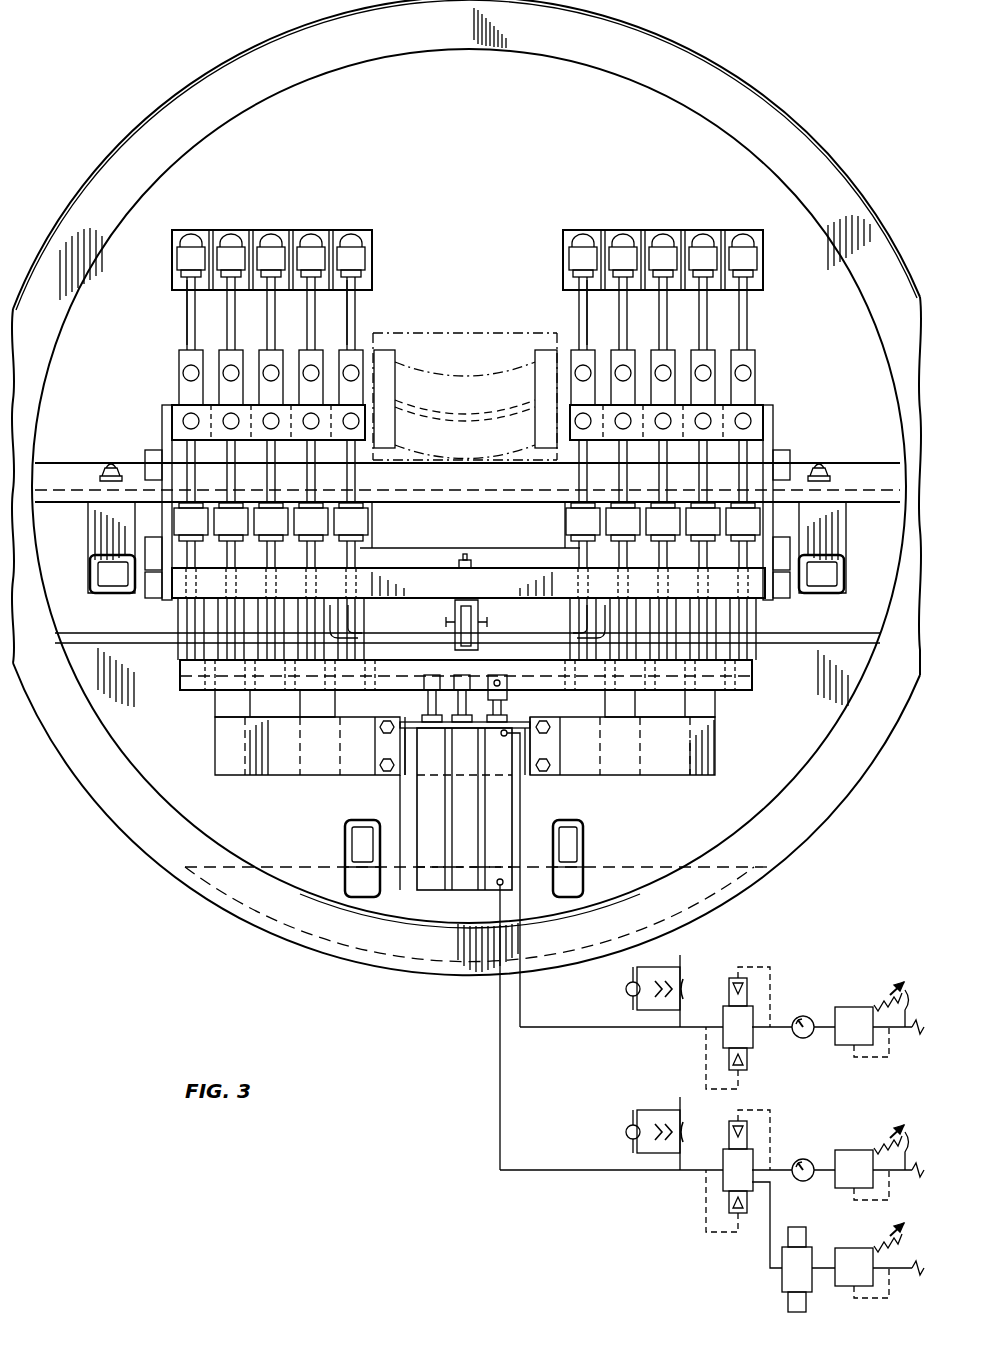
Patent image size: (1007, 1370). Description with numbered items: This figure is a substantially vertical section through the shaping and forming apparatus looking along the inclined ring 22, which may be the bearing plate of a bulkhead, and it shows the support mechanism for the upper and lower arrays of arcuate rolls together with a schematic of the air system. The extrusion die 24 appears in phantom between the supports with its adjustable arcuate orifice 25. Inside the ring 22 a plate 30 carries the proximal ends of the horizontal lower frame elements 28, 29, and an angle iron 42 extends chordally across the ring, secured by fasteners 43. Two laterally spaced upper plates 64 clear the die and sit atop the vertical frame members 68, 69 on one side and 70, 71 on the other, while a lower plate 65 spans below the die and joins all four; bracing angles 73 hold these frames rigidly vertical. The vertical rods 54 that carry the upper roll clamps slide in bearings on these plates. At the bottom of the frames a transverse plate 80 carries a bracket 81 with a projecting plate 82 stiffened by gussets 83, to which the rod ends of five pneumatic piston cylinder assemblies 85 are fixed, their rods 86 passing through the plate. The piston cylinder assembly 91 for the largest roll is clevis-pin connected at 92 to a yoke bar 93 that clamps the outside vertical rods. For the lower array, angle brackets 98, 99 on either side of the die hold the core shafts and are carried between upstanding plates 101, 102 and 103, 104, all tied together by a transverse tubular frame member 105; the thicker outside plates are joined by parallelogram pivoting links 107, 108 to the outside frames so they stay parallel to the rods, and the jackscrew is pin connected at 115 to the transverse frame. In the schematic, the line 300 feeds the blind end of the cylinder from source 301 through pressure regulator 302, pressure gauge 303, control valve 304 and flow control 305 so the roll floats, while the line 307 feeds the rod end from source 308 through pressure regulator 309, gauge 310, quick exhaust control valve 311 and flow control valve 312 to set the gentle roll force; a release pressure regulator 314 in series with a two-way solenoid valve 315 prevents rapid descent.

The ring 22 is at (372, 44).
The extrusion die 24 is at (430, 375).
The arcuate orifice 25 is at (462, 418).
The lower frame element 28 is at (583, 840).
The lower frame element 29 is at (348, 842).
The plate 30 is at (637, 862).
The angle iron 42 is at (72, 495).
The fasteners 43 is at (108, 466).
The vertical rods 54 is at (356, 300).
The upper plates 64 is at (372, 250).
The lower plate 65 is at (470, 562).
The vertical frame member 68 is at (712, 308).
The vertical frame member 69 is at (602, 300).
The vertical frame member 70 is at (328, 318).
The vertical frame member 71 is at (215, 306).
The bracing angles 73 is at (340, 615).
The transverse plate 80 is at (278, 775).
The bracket 81 is at (535, 740).
The plate 82 is at (468, 728).
The gussets 83 is at (400, 742).
The pneumatic piston cylinder assemblies 85 is at (412, 826).
The rods 86 is at (418, 712).
The piston cylinder assembly 91 is at (480, 885).
The clevis-pin connection 92 is at (507, 700).
The yoke bar 93 is at (572, 688).
The angle bracket 98 is at (182, 395).
The angle bracket 99 is at (755, 395).
The upstanding plate 101 is at (155, 512).
The upstanding plate 102 is at (340, 470).
The upstanding plate 103 is at (590, 470).
The upstanding plate 104 is at (778, 512).
The transverse tubular frame member 105 is at (392, 592).
The parallelogram pivoting link 107 is at (150, 418).
The parallelogram pivoting link 108 is at (140, 610).
The pin connection 115 is at (480, 622).
The line 300 is at (500, 1050).
The source 301 is at (892, 1146).
The pressure regulator 302 is at (842, 1150).
The pressure gauge 303 is at (805, 1158).
The control valve 304 is at (722, 1150).
The flow control 305 is at (640, 1150).
The line 307 is at (520, 800).
The source 308 is at (894, 994).
The pressure regulator 309 is at (838, 1006).
The gauge 310 is at (803, 1038).
The quick exhaust control valve 311 is at (722, 1008).
The flow control valve 312 is at (632, 1005).
The release pressure regulator 314 is at (840, 1248).
The 2-way solenoid valve 315 is at (782, 1282).